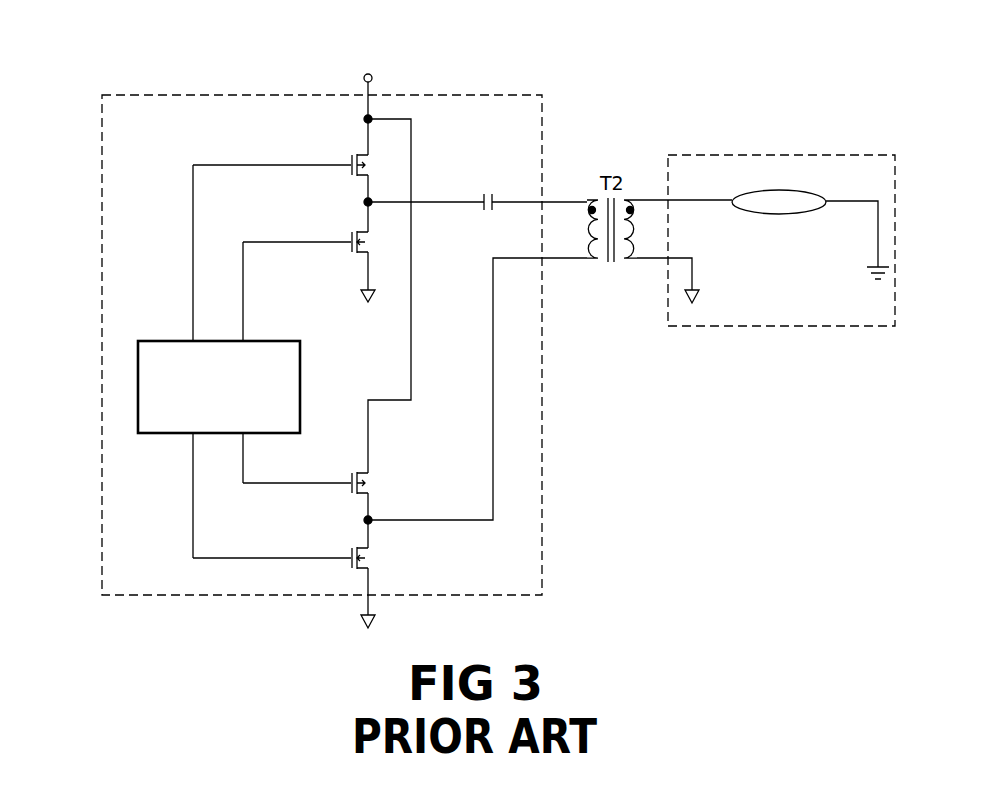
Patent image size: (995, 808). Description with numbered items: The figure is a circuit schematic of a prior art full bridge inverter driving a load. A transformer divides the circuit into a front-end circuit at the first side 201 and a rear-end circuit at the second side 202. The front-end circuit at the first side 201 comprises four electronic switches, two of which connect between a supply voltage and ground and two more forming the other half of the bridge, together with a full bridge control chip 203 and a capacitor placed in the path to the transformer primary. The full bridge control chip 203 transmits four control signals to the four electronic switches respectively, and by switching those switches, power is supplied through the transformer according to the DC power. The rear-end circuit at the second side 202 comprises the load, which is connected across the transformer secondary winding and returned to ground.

The first side 201 is at (472, 94).
The second side 202 is at (780, 154).
The full bridge control chip 203 is at (150, 387).